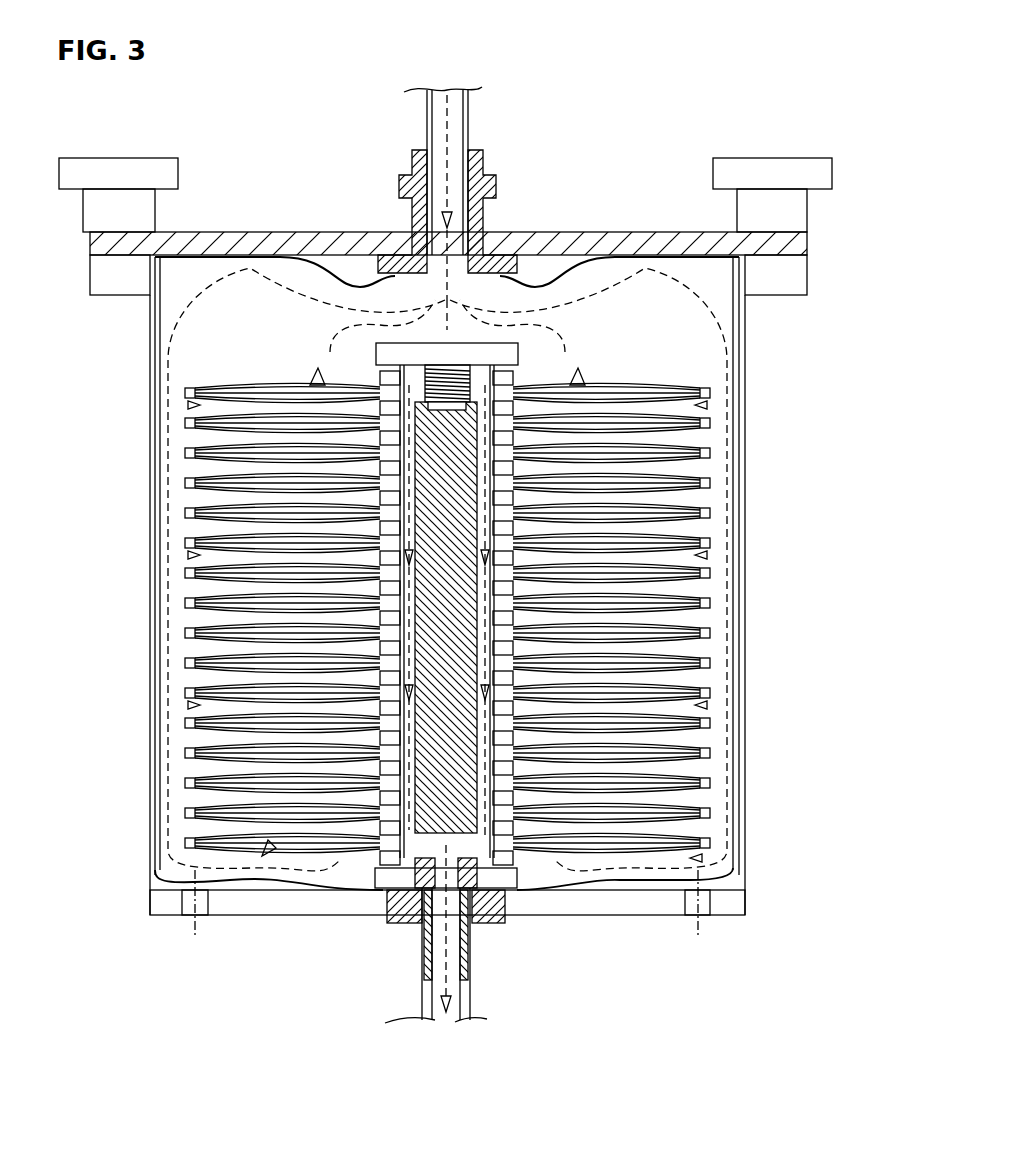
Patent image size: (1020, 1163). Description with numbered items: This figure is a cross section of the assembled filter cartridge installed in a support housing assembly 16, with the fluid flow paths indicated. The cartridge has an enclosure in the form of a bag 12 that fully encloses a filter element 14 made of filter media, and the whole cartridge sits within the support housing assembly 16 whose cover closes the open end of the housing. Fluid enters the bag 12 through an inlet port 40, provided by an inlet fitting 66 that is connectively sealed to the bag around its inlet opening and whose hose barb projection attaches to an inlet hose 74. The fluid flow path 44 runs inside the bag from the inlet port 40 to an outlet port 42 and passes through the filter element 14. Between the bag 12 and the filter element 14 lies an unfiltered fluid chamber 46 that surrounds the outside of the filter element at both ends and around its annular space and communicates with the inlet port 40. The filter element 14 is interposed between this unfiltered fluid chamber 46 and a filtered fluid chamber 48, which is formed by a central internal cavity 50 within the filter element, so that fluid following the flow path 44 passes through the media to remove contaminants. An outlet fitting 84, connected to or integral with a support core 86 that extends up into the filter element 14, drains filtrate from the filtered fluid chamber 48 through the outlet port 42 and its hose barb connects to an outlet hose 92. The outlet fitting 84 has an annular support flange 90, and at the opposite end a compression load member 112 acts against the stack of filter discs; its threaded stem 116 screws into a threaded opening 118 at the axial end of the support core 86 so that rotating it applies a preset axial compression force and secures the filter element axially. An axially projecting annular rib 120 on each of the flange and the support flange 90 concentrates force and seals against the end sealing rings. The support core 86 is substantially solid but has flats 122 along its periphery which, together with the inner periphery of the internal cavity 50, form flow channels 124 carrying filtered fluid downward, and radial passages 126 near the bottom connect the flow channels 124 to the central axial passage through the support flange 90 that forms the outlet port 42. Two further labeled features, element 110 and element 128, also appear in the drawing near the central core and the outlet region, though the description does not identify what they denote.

The bag 12 is at (338, 233).
The filter element 14 is at (376, 484).
The support housing assembly 16 is at (810, 243).
The inlet port 40 is at (446, 230).
The outlet port 42 is at (437, 1040).
The fluid flow path 44 is at (740, 320).
The unfiltered fluid chamber 46 is at (658, 275).
The filtered fluid chamber 48 is at (470, 950).
The central internal cavity 50 is at (403, 730).
The inlet fitting 66 is at (469, 216).
The inlet hose 74 is at (427, 118).
The outlet fitting 84 is at (453, 1025).
The support core 86 is at (458, 600).
The support flange 90 is at (432, 935).
The outlet hose 92 is at (486, 1018).
The central core rod 110 is at (458, 512).
The compression load member 112 is at (518, 352).
The threaded stem 116 is at (350, 328).
The threaded opening 118 is at (430, 398).
The annular rib 120 is at (513, 375).
The flats 122 is at (403, 548).
The flow channels 124 is at (403, 618).
The radial passages 126 is at (410, 925).
The outlet sleeve 128 is at (470, 1000).